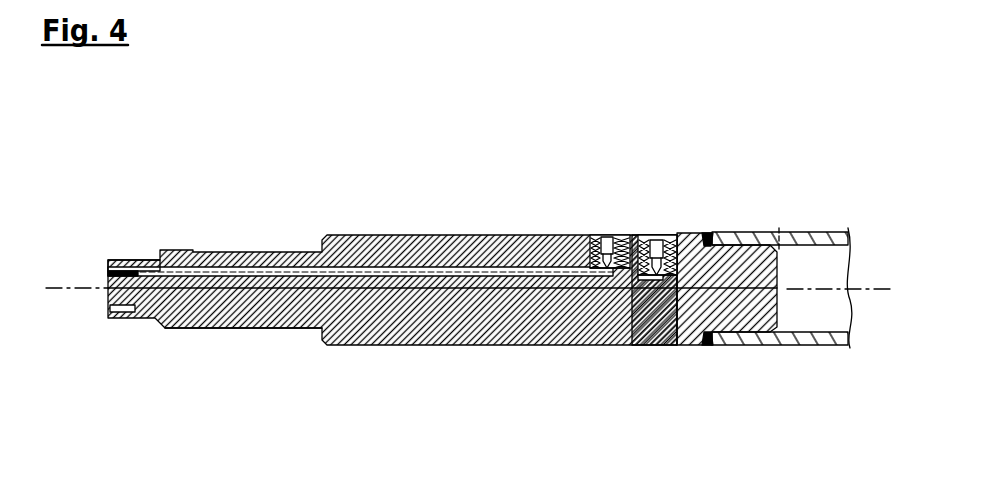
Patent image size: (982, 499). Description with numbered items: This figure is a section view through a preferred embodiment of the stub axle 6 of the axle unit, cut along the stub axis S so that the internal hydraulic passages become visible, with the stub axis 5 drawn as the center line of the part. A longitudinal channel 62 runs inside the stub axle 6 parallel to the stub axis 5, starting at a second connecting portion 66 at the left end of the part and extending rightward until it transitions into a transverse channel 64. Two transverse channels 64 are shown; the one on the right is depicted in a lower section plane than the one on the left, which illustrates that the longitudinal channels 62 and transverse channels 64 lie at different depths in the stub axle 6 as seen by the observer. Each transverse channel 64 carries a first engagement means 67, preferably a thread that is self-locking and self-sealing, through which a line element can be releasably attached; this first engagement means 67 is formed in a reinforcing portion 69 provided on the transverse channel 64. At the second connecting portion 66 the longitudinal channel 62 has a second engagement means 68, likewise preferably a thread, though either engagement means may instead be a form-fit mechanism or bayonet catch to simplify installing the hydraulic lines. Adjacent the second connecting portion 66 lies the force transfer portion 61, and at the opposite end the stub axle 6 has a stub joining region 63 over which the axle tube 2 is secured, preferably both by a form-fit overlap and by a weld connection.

The axle tube 2 is at (822, 233).
The stub axis 5 is at (73, 286).
The stub axle 6 is at (485, 240).
The force transfer portion 61 is at (153, 323).
The longitudinal channel 62 is at (383, 268).
The stub joining region 63 is at (780, 226).
The transverse channel 64 is at (615, 240).
The second connecting portion 66 is at (104, 262).
The first engagement means 67 is at (606, 240).
The second engagement means 68 is at (108, 303).
The reinforcing portion 69 is at (592, 242).